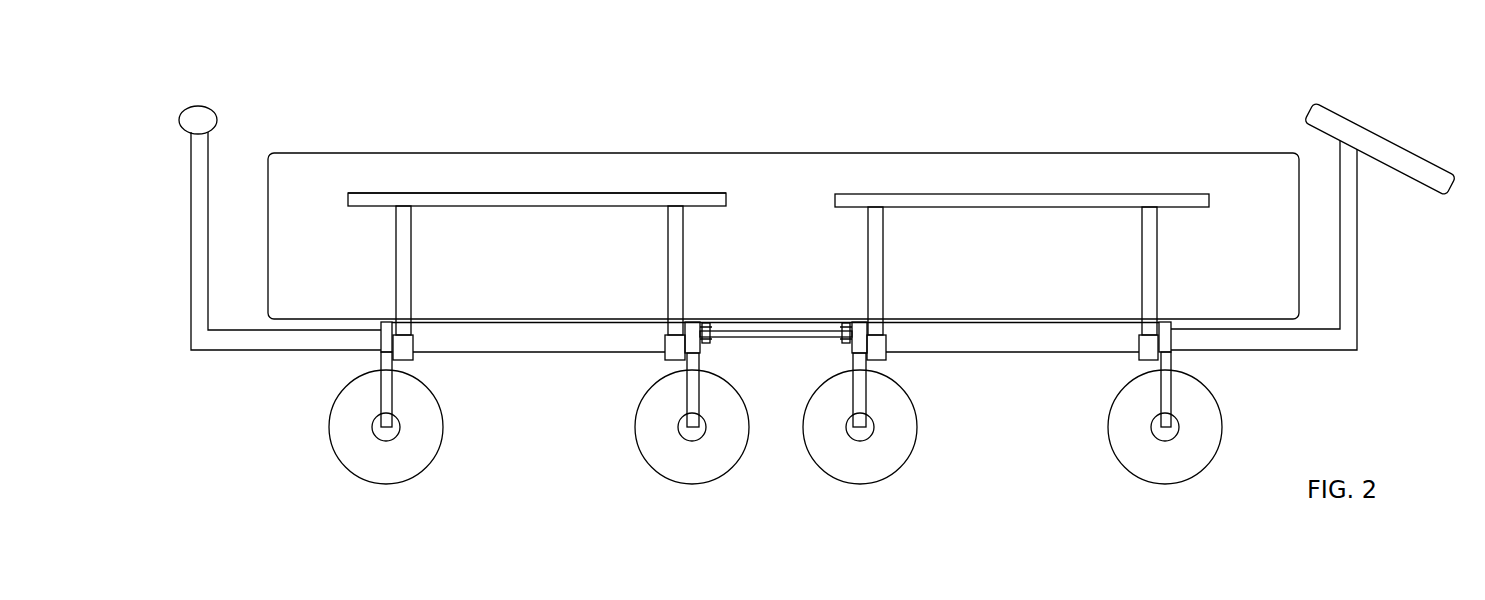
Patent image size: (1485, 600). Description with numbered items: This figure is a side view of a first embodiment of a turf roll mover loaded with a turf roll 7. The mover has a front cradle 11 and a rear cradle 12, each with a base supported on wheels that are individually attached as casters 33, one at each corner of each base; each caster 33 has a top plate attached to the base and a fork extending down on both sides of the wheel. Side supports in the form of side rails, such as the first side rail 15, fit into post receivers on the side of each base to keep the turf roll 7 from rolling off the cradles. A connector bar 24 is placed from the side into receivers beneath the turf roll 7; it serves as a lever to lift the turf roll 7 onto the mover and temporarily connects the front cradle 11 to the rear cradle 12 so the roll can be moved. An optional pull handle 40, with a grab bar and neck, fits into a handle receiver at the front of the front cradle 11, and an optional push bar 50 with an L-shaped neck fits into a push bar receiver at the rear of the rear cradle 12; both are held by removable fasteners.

The turf roll 7 is at (383, 153).
The front cradle 11 is at (537, 189).
The rear cradle 12 is at (1028, 175).
The first side rail 15 is at (502, 193).
The connector bar 24 is at (788, 338).
The caster 33 is at (329, 376).
The pull handle 40 is at (204, 76).
The push bar 50 is at (1366, 85).